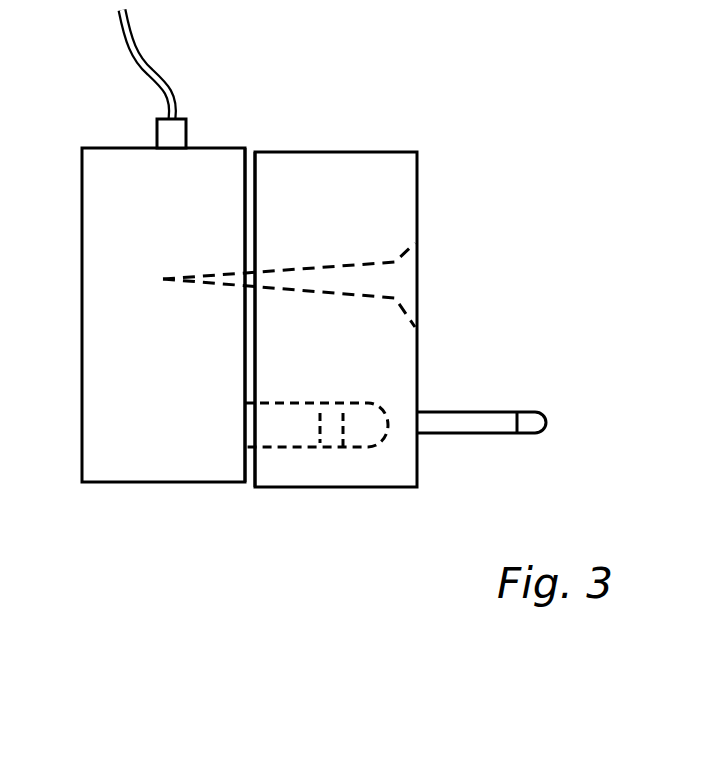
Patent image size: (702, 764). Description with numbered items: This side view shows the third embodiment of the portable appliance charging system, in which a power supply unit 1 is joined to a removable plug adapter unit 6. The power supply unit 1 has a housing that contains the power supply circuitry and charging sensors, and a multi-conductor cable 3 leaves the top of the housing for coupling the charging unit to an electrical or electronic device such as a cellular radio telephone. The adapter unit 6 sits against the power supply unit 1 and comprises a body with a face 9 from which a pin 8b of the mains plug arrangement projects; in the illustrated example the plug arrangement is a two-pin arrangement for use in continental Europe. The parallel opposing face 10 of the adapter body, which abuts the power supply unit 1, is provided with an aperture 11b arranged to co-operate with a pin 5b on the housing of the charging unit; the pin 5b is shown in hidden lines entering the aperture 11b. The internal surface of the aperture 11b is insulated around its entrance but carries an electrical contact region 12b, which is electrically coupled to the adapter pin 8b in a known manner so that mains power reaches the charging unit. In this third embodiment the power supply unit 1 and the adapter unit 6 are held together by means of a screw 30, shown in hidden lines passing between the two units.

The power supply unit 1 is at (112, 532).
The multi-conductor cable 3 is at (139, 66).
The removable plug adapter unit 6 is at (490, 273).
The face of the adapter body 9 is at (417, 183).
The parallel opposing face 10 is at (254, 198).
The screw 30 is at (402, 273).
The pin 8b is at (470, 426).
The pin 5b is at (277, 428).
The electrical contact region 12b is at (330, 425).
The aperture 11b is at (377, 447).